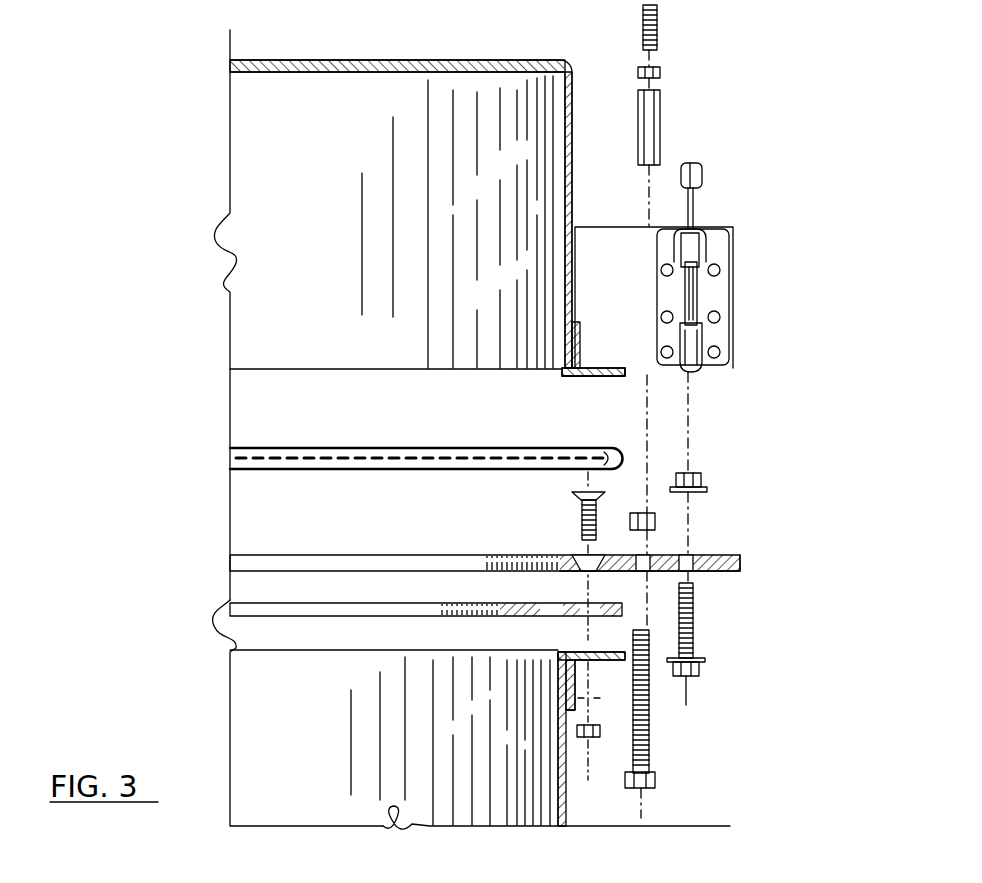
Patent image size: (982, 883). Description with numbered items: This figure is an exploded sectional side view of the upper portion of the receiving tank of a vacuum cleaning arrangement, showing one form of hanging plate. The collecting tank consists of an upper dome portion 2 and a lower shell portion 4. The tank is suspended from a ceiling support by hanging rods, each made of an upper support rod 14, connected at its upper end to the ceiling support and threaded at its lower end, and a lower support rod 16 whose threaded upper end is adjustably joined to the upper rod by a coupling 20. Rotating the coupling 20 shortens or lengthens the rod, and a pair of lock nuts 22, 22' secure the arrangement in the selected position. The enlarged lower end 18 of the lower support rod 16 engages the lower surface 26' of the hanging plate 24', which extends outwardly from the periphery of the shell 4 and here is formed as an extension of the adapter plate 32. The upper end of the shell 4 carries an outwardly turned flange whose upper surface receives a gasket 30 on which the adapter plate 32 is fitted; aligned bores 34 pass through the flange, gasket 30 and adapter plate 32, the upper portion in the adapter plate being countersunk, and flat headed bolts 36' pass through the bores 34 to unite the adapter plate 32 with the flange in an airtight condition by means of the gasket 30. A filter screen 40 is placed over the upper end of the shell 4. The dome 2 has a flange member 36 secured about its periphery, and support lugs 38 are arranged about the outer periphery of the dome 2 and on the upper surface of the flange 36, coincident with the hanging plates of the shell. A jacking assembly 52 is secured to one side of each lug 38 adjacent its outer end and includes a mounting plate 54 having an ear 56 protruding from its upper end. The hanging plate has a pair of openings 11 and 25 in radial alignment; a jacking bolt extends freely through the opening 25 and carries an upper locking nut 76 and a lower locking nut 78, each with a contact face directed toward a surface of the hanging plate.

The upper or dome portion 2 is at (297, 210).
The lower or shell portion 4 is at (290, 756).
The opening 11 is at (648, 552).
The upper support rod 14 is at (657, 27).
The lower support rod 16 is at (649, 735).
The enlarged lower end 18 is at (655, 780).
The coupling 20 is at (660, 126).
The lock nut 22 is at (725, 72).
The lock nut 22' is at (724, 505).
The hanging plate 24' is at (748, 577).
The opening 25 is at (705, 556).
The lower surface 26' is at (689, 608).
The gasket 30 is at (230, 605).
The adapter plate 32 is at (230, 558).
The aligned bore 34 is at (572, 556).
The flange member 36 is at (569, 398).
The flat headed bolt 36' is at (549, 626).
The support lug 38 is at (735, 296).
The filter screen 40 is at (315, 447).
The jacking assembly 52 is at (723, 210).
The mounting plate 54 is at (715, 246).
The ear 56 is at (703, 372).
The upper locking nut 76 is at (707, 478).
The lower locking nut 78 is at (705, 670).